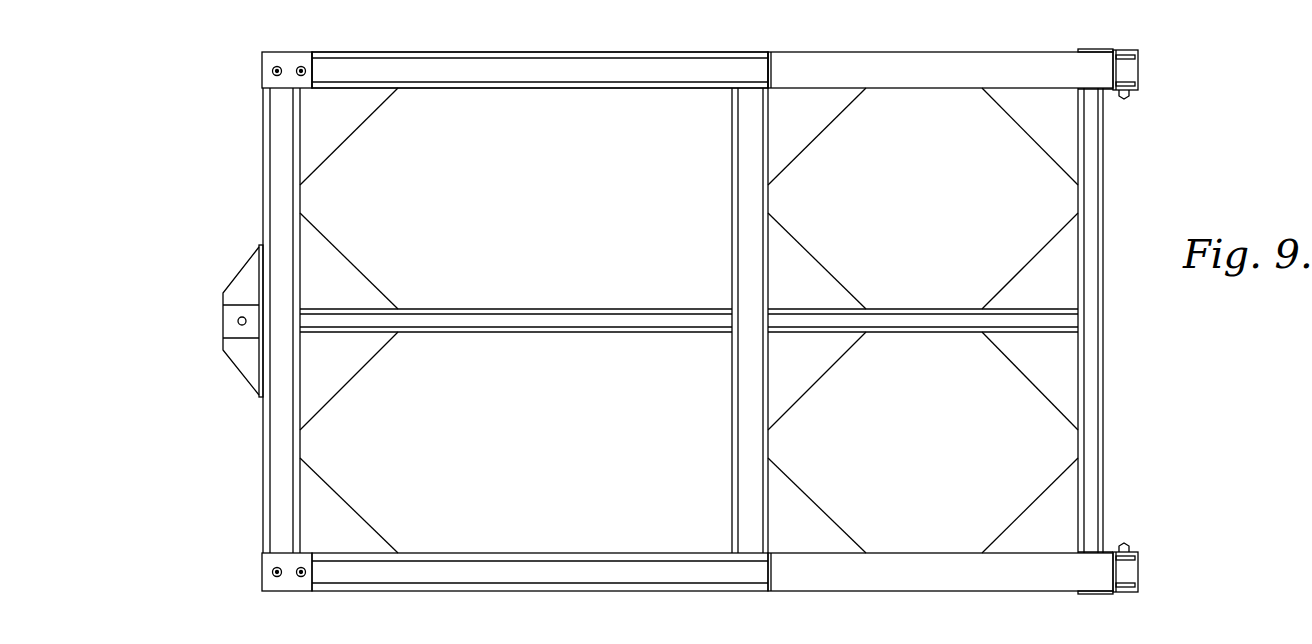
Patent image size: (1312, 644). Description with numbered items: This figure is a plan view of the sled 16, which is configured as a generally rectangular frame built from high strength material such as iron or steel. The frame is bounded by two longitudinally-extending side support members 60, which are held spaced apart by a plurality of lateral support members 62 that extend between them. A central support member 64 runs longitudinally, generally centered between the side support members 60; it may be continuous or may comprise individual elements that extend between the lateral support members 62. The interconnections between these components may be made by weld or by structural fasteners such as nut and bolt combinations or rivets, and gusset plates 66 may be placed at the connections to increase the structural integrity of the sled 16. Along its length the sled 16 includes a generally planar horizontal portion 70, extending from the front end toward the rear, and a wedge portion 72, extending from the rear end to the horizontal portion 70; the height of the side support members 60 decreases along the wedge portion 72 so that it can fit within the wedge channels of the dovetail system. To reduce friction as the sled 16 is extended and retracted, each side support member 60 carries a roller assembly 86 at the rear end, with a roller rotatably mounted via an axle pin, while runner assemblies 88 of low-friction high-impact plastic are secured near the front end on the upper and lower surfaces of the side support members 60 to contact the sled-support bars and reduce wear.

The sled 16 is at (218, 126).
The side support members 60 is at (718, 55).
The lateral support members 62 is at (278, 434).
The central support member 64 is at (623, 322).
The gusset plates 66 is at (332, 127).
The horizontal portion 70 is at (400, 64).
The wedge portion 72 is at (952, 63).
The roller assemblies 86 is at (1128, 68).
The runner assemblies 88 is at (275, 62).